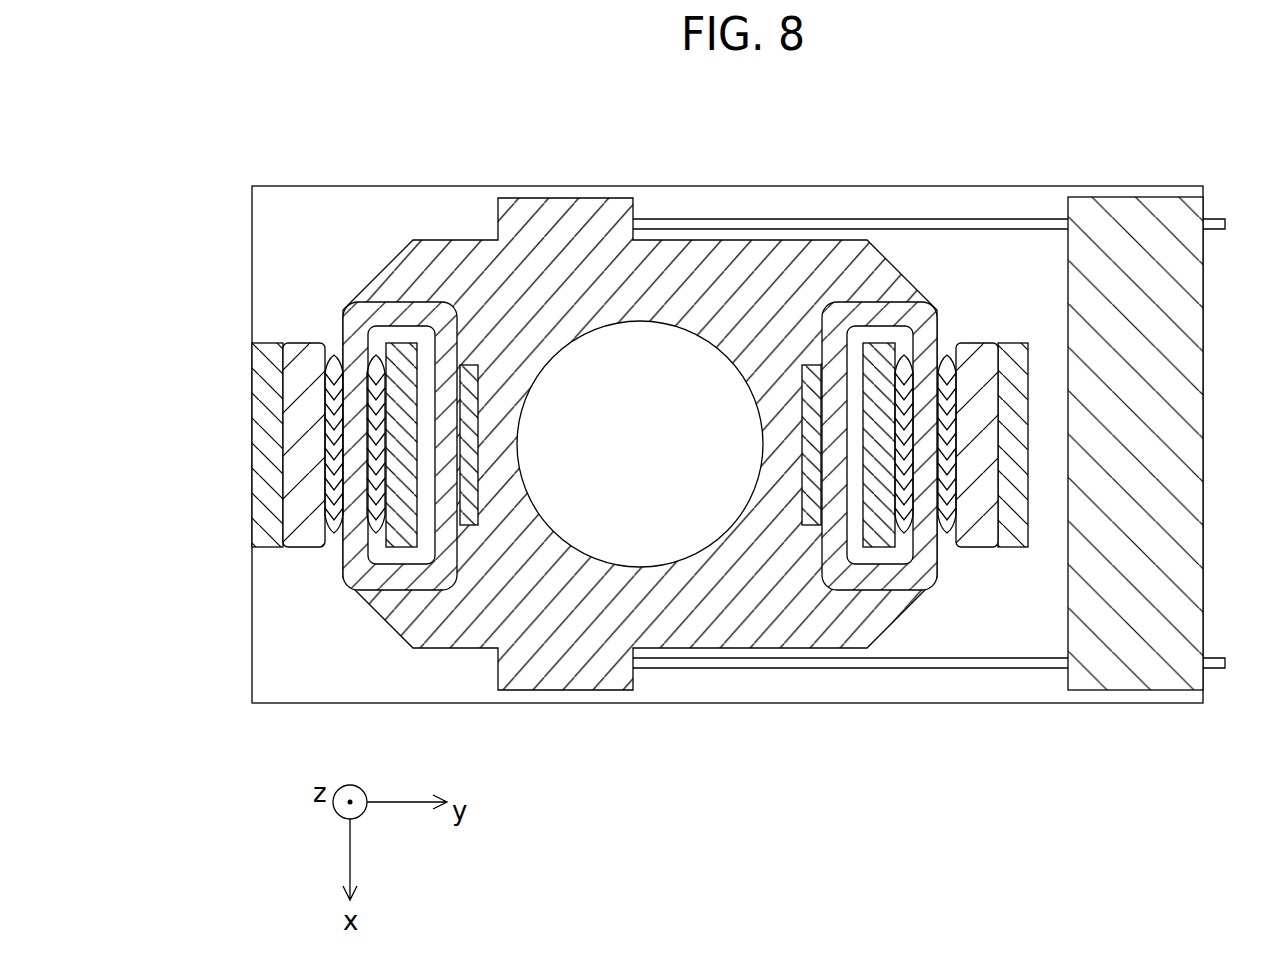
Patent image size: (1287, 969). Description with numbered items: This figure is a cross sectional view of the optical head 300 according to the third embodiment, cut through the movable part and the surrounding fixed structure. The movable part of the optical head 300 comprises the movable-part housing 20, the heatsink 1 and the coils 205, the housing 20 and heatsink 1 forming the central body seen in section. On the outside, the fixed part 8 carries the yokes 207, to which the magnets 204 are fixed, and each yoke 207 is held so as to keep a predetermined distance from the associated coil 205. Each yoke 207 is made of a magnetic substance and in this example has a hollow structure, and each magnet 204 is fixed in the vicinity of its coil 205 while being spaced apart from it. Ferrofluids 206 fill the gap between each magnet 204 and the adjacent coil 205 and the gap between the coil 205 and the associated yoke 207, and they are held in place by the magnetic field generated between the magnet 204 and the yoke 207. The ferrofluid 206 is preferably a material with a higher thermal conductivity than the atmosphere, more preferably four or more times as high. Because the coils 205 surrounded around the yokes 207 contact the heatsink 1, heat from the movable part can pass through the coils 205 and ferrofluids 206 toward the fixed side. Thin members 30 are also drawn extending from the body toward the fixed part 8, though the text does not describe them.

The optical head 300 is at (302, 103).
The movable-part housing 20 is at (682, 258).
The heatsink 1 is at (470, 372).
The fixed part 8 is at (1142, 223).
The guide shaft 30 is at (1020, 223).
The magnet 204 is at (305, 535).
The coil 205 is at (385, 578).
The ferrofluid 206 is at (377, 355).
The yoke 207 is at (402, 350).